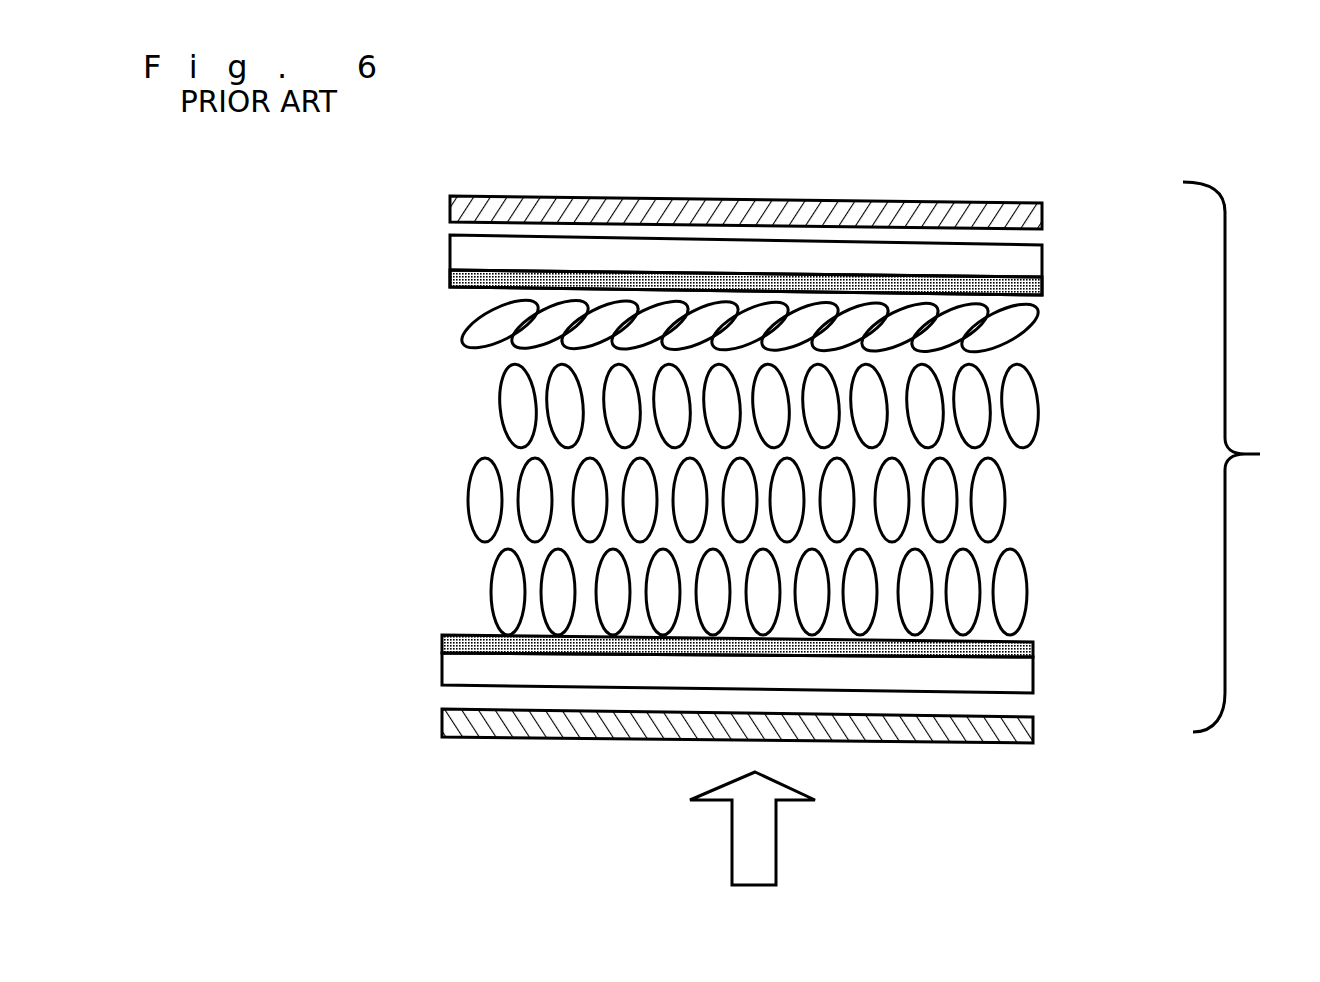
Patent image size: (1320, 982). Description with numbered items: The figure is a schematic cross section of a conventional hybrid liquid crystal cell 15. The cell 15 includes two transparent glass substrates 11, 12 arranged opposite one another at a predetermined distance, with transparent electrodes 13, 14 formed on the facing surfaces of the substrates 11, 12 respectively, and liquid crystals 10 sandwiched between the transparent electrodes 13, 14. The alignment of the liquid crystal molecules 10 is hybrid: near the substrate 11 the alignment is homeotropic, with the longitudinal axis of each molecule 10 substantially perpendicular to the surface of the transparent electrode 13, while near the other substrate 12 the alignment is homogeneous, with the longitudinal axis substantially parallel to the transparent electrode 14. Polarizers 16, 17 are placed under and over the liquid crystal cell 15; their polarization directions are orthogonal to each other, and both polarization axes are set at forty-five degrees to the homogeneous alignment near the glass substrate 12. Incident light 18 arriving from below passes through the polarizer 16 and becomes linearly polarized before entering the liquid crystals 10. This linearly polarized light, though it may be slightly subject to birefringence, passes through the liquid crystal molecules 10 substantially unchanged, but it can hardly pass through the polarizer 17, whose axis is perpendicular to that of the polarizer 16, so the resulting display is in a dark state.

The liquid crystal molecule 10 is at (1003, 345).
The substrate 11 is at (1017, 683).
The substrate 12 is at (1007, 270).
The transparent electrode 13 is at (1030, 645).
The transparent electrode 14 is at (1040, 287).
The liquid crystal cell 15 is at (1250, 457).
The polarizer 16 is at (1013, 735).
The polarizer 17 is at (957, 202).
The incident light 18 is at (760, 828).